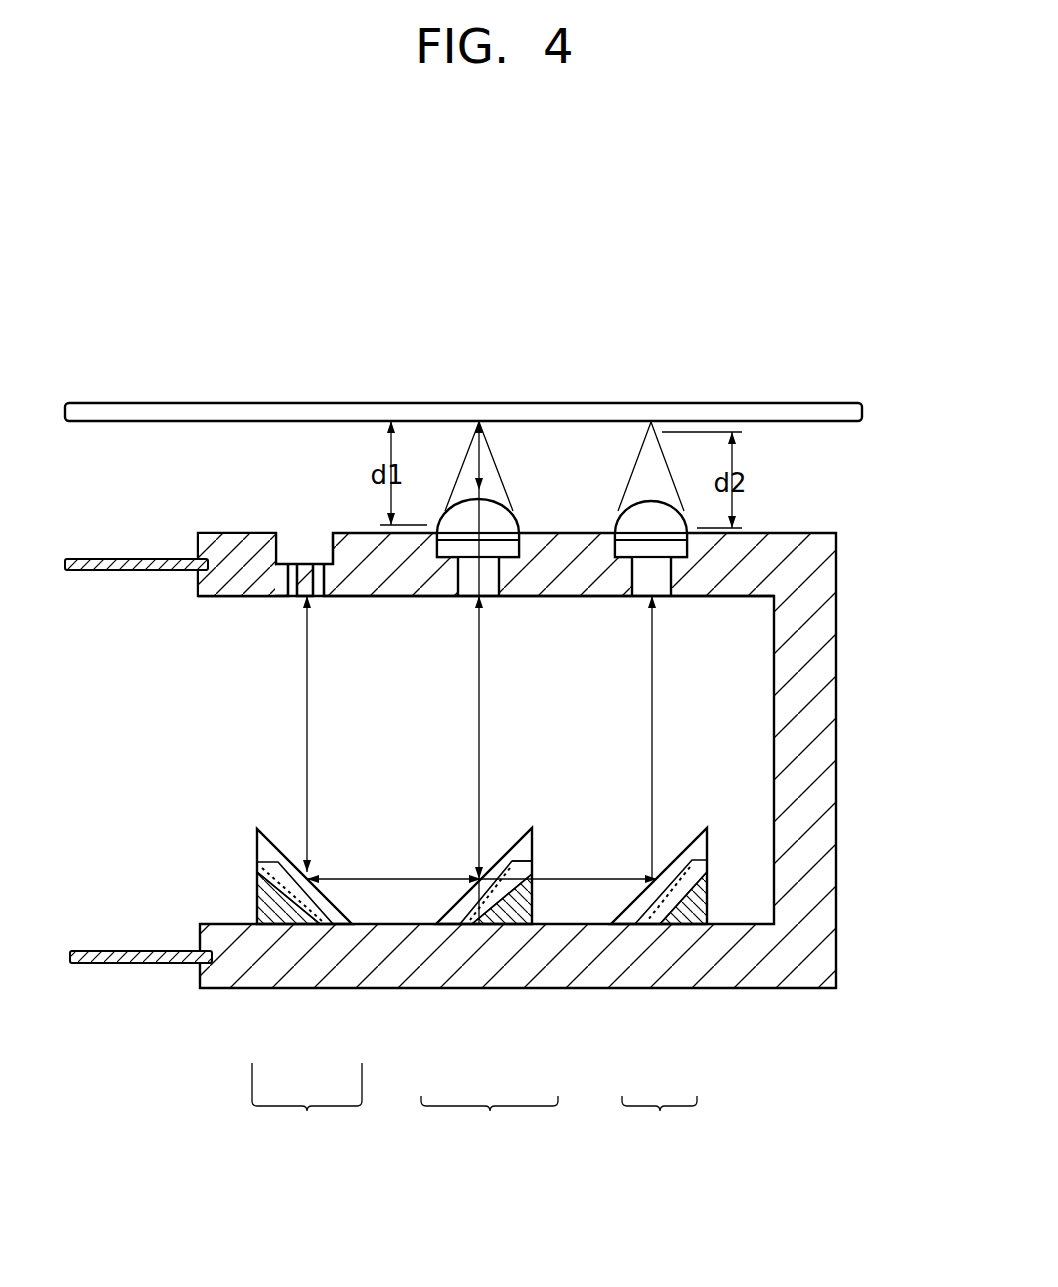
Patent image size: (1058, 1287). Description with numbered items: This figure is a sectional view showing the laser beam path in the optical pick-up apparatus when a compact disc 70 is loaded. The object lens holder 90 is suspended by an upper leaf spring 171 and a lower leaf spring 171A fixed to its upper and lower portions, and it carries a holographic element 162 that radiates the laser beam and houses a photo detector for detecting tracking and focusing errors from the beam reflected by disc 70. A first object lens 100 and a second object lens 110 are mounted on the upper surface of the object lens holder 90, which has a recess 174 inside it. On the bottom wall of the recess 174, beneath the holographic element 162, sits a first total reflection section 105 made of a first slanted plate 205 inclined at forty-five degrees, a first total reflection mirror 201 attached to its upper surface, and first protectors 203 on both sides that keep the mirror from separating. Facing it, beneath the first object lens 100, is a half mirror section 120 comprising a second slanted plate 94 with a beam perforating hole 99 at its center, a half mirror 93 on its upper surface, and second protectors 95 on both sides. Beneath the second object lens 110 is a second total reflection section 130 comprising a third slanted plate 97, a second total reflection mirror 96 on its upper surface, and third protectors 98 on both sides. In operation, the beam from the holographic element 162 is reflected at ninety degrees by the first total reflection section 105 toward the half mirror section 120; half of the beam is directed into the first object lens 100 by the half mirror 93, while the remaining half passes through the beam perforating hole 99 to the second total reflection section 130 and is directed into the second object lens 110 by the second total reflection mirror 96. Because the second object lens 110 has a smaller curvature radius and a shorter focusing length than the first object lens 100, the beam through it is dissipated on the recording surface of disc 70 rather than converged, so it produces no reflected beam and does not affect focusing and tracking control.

The disc 70 is at (783, 410).
The object lens holder 90 is at (803, 680).
The recess 174 is at (715, 763).
The holographic element 162 is at (304, 550).
The upper leaf spring 171 is at (104, 557).
The lower leaf spring 171A is at (117, 965).
The first object lens 100 is at (492, 520).
The second object lens 110 is at (640, 520).
The first total reflection section 105 is at (306, 987).
The first protectors 203 is at (342, 906).
The first total reflection mirror 201 is at (305, 905).
The first slanted plate 205 is at (277, 903).
The half mirror section 120 is at (490, 987).
The second protectors 95 is at (452, 907).
The half mirror 93 is at (478, 917).
The second slanted plate 94 is at (510, 913).
The beam perforating hole 99 is at (532, 887).
The second total reflection section 130 is at (660, 987).
The third protectors 98 is at (621, 907).
The second total reflection mirror 96 is at (640, 910).
The third slanted plate 97 is at (693, 913).